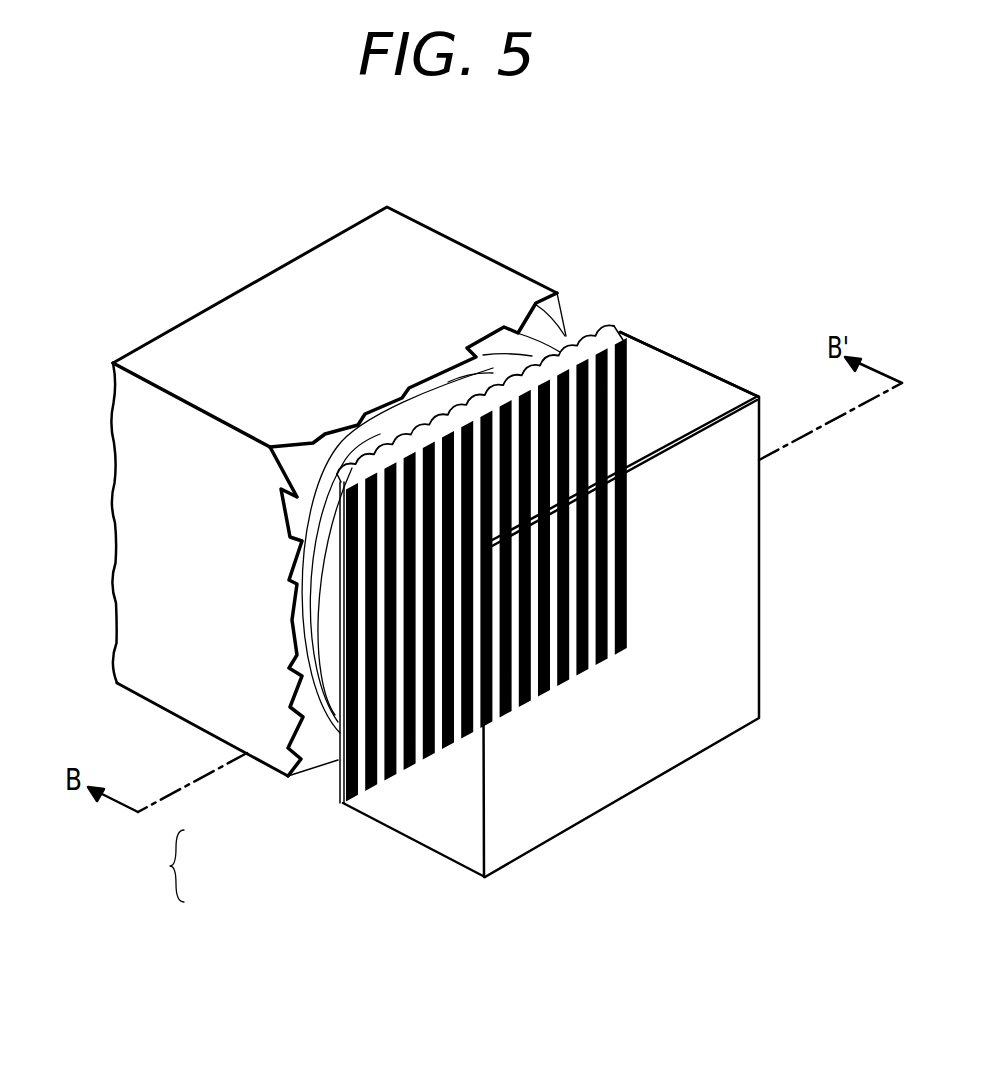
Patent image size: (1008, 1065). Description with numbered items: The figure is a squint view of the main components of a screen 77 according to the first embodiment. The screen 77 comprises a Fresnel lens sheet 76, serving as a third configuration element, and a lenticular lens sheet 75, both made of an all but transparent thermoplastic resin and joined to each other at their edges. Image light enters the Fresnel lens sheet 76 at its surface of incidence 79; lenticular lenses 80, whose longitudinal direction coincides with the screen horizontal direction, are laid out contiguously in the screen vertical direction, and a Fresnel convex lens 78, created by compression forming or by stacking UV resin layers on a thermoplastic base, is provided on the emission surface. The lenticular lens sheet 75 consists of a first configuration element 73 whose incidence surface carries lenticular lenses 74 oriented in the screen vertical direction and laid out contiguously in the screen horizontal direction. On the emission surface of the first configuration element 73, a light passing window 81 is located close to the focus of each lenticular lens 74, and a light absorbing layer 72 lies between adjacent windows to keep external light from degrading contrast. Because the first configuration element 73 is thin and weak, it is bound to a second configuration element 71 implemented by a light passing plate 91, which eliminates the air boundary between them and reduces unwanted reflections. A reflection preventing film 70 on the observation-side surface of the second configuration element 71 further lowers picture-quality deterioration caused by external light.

The reflection preventing film 70 is at (760, 393).
The second configuration element 71 is at (690, 378).
The light absorbing layer 72 is at (610, 330).
The first configuration element 73 is at (607, 325).
The lenticular lens 74 is at (573, 327).
The lenticular lens sheet 75 is at (360, 810).
The Fresnel lens sheet 76 is at (270, 760).
The screen 77 is at (162, 866).
The Fresnel convex lens 78 is at (297, 693).
The surface of incidence 79 is at (222, 302).
The lenticular lens 80 is at (112, 545).
The light passing window 81 is at (590, 660).
The light passing plate 91 is at (418, 827).